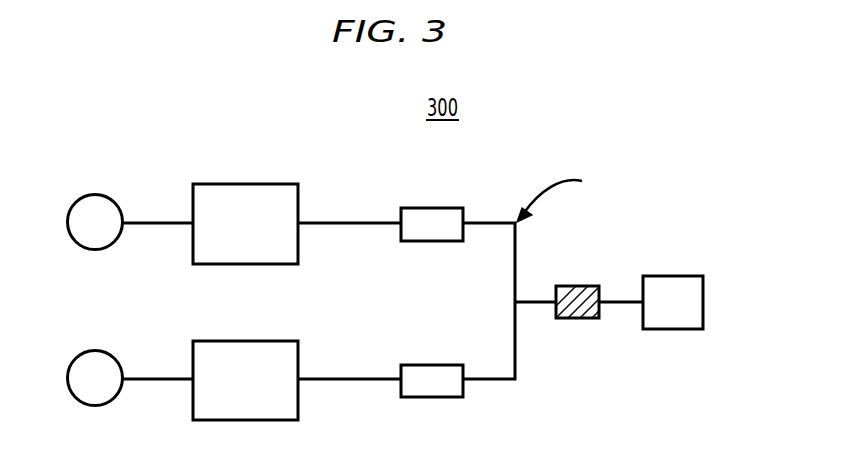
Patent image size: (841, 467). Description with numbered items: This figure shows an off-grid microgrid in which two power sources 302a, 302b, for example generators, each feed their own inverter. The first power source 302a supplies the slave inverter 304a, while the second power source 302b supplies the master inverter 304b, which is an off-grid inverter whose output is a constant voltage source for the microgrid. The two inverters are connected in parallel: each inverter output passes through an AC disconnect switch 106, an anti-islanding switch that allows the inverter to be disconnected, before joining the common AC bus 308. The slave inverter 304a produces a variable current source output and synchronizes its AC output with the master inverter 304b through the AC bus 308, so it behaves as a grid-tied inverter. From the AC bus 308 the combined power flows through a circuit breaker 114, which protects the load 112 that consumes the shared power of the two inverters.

The power source 302a is at (95, 194).
The power source 302b is at (95, 350).
The slave inverter 304a is at (298, 200).
The master inverter 304b is at (298, 356).
The AC disconnect switch 106 is at (437, 241).
The AC bus 308 is at (500, 222).
The circuit breaker 114 is at (577, 286).
The load 112 is at (703, 292).